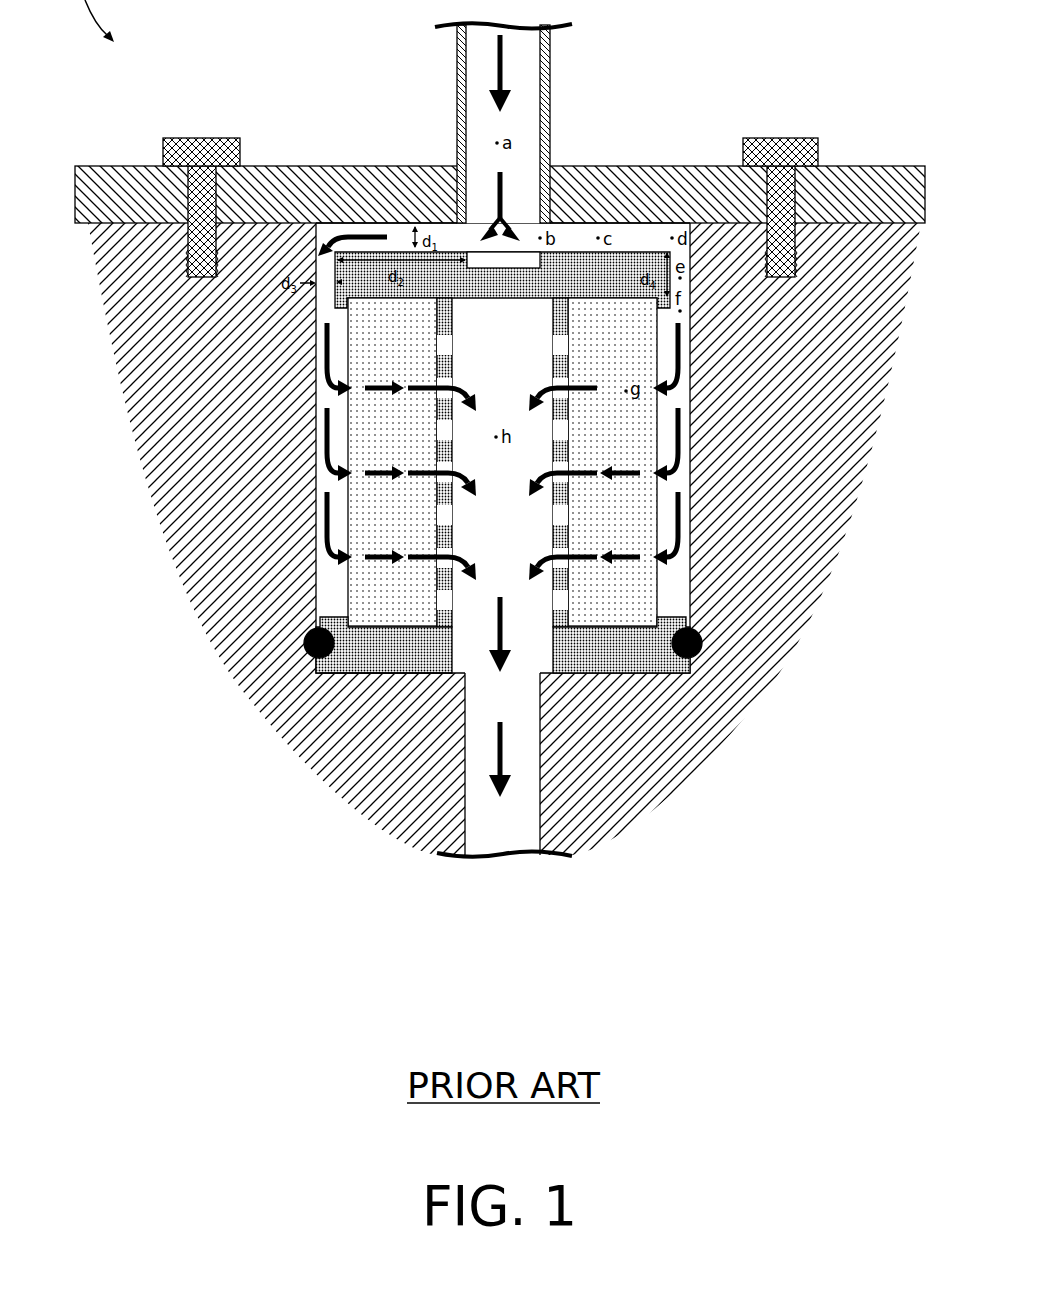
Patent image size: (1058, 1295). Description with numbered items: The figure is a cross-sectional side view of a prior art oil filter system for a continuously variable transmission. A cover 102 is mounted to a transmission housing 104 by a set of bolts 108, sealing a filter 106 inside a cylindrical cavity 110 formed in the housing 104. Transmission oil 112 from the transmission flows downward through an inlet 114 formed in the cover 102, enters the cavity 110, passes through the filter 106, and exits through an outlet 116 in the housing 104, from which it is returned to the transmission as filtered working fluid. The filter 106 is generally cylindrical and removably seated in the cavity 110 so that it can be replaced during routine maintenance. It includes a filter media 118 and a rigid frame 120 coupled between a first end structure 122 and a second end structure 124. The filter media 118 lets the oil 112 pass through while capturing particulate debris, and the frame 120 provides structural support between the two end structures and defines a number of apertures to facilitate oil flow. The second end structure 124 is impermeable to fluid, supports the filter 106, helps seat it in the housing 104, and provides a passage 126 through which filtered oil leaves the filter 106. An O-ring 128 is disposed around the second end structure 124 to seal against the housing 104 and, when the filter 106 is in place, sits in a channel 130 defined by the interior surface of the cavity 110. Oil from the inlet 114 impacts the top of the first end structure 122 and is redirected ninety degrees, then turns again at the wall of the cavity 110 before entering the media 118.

The cover 102 is at (330, 188).
The transmission housing 104 is at (219, 416).
The filter 106 is at (645, 252).
The bolts 108 is at (200, 137).
The cylindrical cavity 110 is at (683, 582).
The transmission oil 112 is at (508, 206).
The inlet 114 is at (522, 128).
The outlet 116 is at (525, 783).
The filter media 118 is at (350, 590).
The rigid frame 120 is at (556, 540).
The first end structure 122 is at (488, 300).
The second end structure 124 is at (583, 660).
The passage 126 is at (472, 633).
The O-ring 128 is at (338, 648).
The channel 130 is at (315, 638).